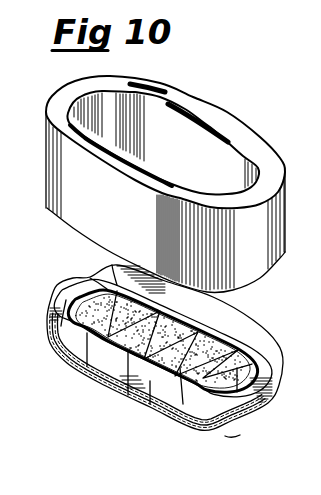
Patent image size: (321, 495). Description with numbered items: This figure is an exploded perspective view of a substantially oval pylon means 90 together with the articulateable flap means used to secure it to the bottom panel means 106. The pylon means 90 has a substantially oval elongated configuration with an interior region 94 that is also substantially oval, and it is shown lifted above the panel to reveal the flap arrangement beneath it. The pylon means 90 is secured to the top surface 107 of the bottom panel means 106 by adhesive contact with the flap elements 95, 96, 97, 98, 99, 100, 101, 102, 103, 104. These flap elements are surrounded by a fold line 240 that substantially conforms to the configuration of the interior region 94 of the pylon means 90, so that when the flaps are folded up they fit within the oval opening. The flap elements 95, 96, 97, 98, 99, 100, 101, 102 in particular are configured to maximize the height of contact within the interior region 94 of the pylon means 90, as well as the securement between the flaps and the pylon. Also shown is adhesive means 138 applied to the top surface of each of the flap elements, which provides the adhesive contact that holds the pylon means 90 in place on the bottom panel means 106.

The pylon means 90 is at (224, 113).
The interior region 94 is at (188, 135).
The flap element 95 is at (265, 337).
The flap element 96 is at (265, 368).
The flap element 97 is at (251, 416).
The flap element 98 is at (172, 429).
The flap element 99 is at (156, 416).
The flap element 100 is at (243, 323).
The flap element 101 is at (108, 389).
The flap element 102 is at (103, 262).
The flap element 103 is at (89, 277).
The flap element 104 is at (89, 370).
The bottom panel means 106 is at (231, 436).
The top surface 107 is at (243, 427).
The adhesive means 138 is at (119, 407).
The fold line 240 is at (230, 302).